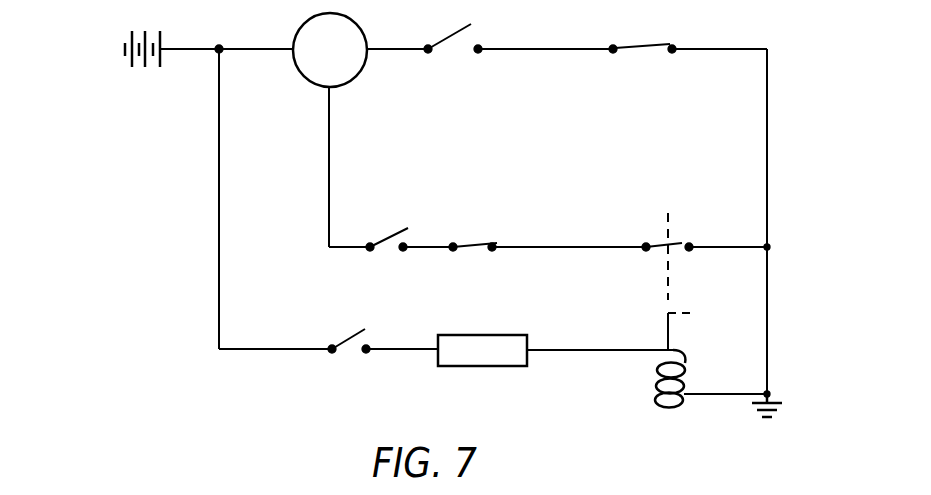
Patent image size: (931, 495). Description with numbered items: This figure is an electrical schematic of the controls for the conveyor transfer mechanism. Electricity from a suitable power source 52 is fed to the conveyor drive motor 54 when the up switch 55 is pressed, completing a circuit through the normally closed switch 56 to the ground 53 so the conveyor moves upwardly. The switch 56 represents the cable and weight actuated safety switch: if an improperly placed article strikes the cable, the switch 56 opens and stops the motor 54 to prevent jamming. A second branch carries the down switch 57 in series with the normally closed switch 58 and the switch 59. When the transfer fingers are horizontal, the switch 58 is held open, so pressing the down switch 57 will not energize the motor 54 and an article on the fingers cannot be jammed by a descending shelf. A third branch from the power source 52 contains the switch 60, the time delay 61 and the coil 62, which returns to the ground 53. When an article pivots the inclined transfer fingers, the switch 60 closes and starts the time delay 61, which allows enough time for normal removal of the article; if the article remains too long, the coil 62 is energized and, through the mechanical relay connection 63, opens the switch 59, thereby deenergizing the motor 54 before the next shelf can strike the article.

The power source 52 is at (160, 32).
The ground 53 is at (775, 410).
The conveyor drive motor 54 is at (348, 16).
The up switch 55 is at (480, 36).
The normally closed switch 56 is at (616, 46).
The down switch 57 is at (405, 244).
The normally closed switch 58 is at (497, 243).
The switch 59 is at (682, 243).
The switch 60 is at (352, 326).
The time delay 61 is at (522, 335).
The coil 62 is at (687, 366).
The mechanical relay connection 63 is at (693, 313).